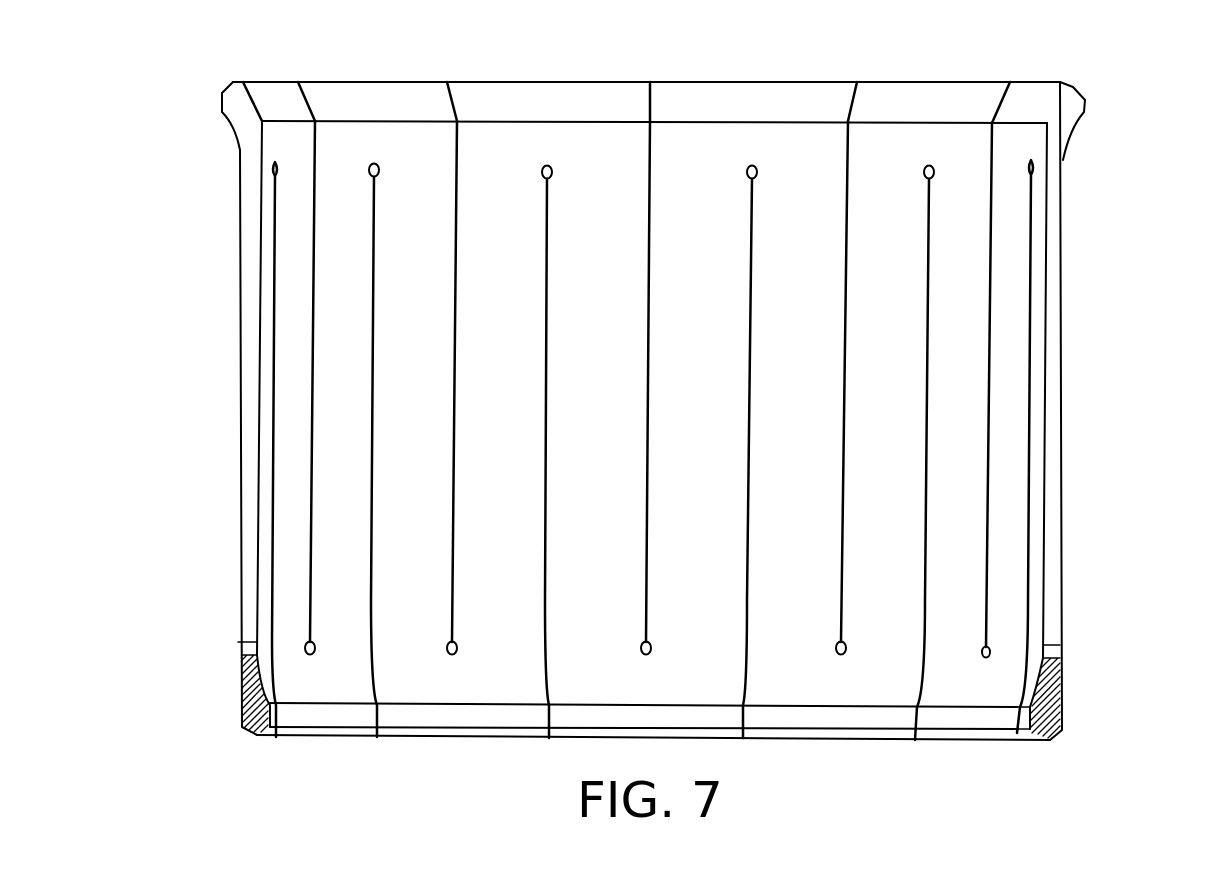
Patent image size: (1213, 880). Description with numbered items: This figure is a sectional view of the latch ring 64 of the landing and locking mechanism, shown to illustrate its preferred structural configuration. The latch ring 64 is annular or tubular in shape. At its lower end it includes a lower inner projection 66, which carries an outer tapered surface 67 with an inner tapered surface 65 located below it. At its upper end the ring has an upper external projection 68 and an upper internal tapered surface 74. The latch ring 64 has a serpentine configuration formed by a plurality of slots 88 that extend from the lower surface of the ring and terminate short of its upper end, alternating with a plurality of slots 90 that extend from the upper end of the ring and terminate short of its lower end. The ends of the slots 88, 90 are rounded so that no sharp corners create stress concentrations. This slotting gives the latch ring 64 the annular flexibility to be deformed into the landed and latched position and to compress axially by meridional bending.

The latch ring 64 is at (243, 312).
The inner tapered surface 65 is at (267, 735).
The lower inner projection 66 is at (1012, 740).
The outer tapered surface 67 is at (1050, 735).
The upper external projection 68 is at (1085, 107).
The upper internal tapered surface 74 is at (1058, 99).
The slots 88 is at (918, 743).
The slots 90 is at (848, 92).